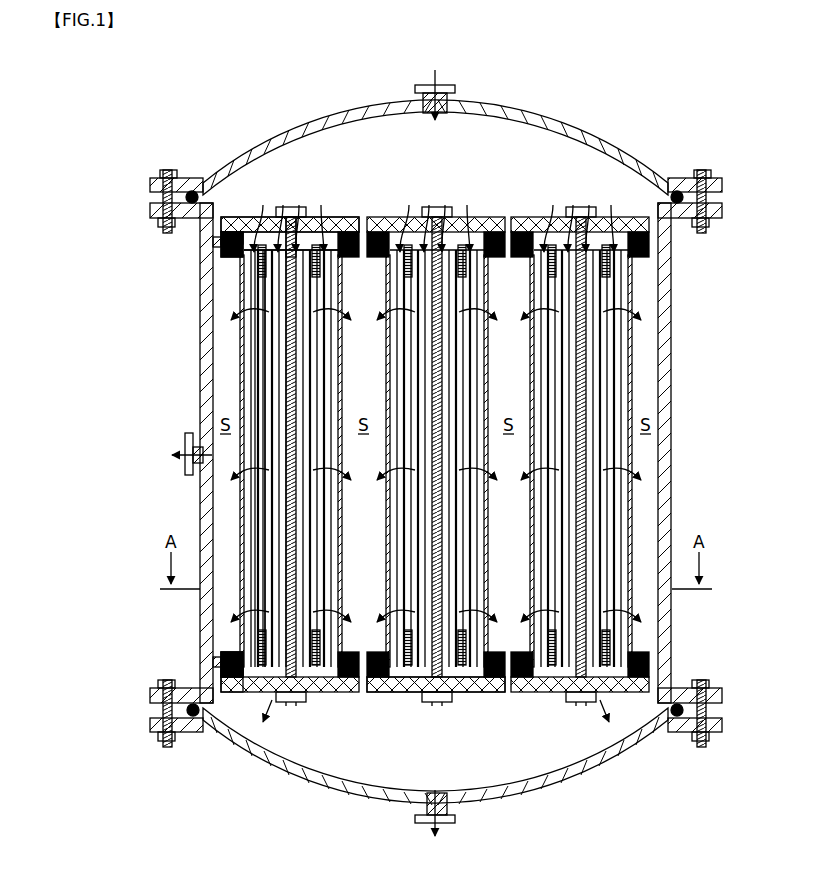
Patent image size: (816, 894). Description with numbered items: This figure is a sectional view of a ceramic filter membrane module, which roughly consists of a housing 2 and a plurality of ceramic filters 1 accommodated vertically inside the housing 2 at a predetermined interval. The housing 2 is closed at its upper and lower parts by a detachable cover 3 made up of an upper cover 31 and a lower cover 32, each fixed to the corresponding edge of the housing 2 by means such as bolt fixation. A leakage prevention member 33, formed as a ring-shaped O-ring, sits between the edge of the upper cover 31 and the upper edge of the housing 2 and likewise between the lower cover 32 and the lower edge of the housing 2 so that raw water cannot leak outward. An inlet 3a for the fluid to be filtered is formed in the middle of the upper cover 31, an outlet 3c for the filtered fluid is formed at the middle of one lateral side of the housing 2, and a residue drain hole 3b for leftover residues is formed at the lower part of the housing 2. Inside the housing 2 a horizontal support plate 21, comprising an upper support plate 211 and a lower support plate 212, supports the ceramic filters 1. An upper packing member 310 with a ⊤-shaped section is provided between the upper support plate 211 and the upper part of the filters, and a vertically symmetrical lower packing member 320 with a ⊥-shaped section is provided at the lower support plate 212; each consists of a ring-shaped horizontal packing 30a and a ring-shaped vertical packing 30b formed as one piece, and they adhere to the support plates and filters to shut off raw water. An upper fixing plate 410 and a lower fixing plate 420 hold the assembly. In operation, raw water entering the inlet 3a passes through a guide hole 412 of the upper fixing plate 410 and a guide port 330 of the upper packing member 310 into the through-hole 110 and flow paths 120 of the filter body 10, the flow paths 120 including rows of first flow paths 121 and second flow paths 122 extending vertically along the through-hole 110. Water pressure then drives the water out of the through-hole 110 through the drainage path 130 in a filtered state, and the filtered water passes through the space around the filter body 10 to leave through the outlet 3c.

The ceramic filter 1 is at (432, 453).
The housing 2 is at (432, 453).
The support plate 21 is at (653, 284).
The upper support plate 211 is at (211, 279).
The lower support plate 212 is at (220, 656).
The cover 3 is at (436, 455).
The upper cover 31 is at (567, 127).
The lower cover 32 is at (611, 765).
The leakage prevention member 33 is at (671, 197).
The inlet 3a is at (452, 91).
The residue drain hole 3b is at (450, 813).
The outlet 3c is at (198, 452).
The filter body 10 is at (388, 455).
The through-hole 110 is at (292, 331).
The flow path 120 is at (195, 458).
The first flow path 121 is at (256, 390).
The second flow path 122 is at (263, 363).
The drainage path 130 is at (264, 477).
The upper packing member 310 is at (183, 432).
The lower packing member 320 is at (150, 605).
The horizontal packing 30a is at (219, 238).
The vertical packing 30b is at (220, 253).
The guide port 330 is at (273, 236).
The upper fixing plate 410 is at (310, 226).
The guide hole 412 is at (321, 240).
The lower fixing plate 420 is at (380, 691).